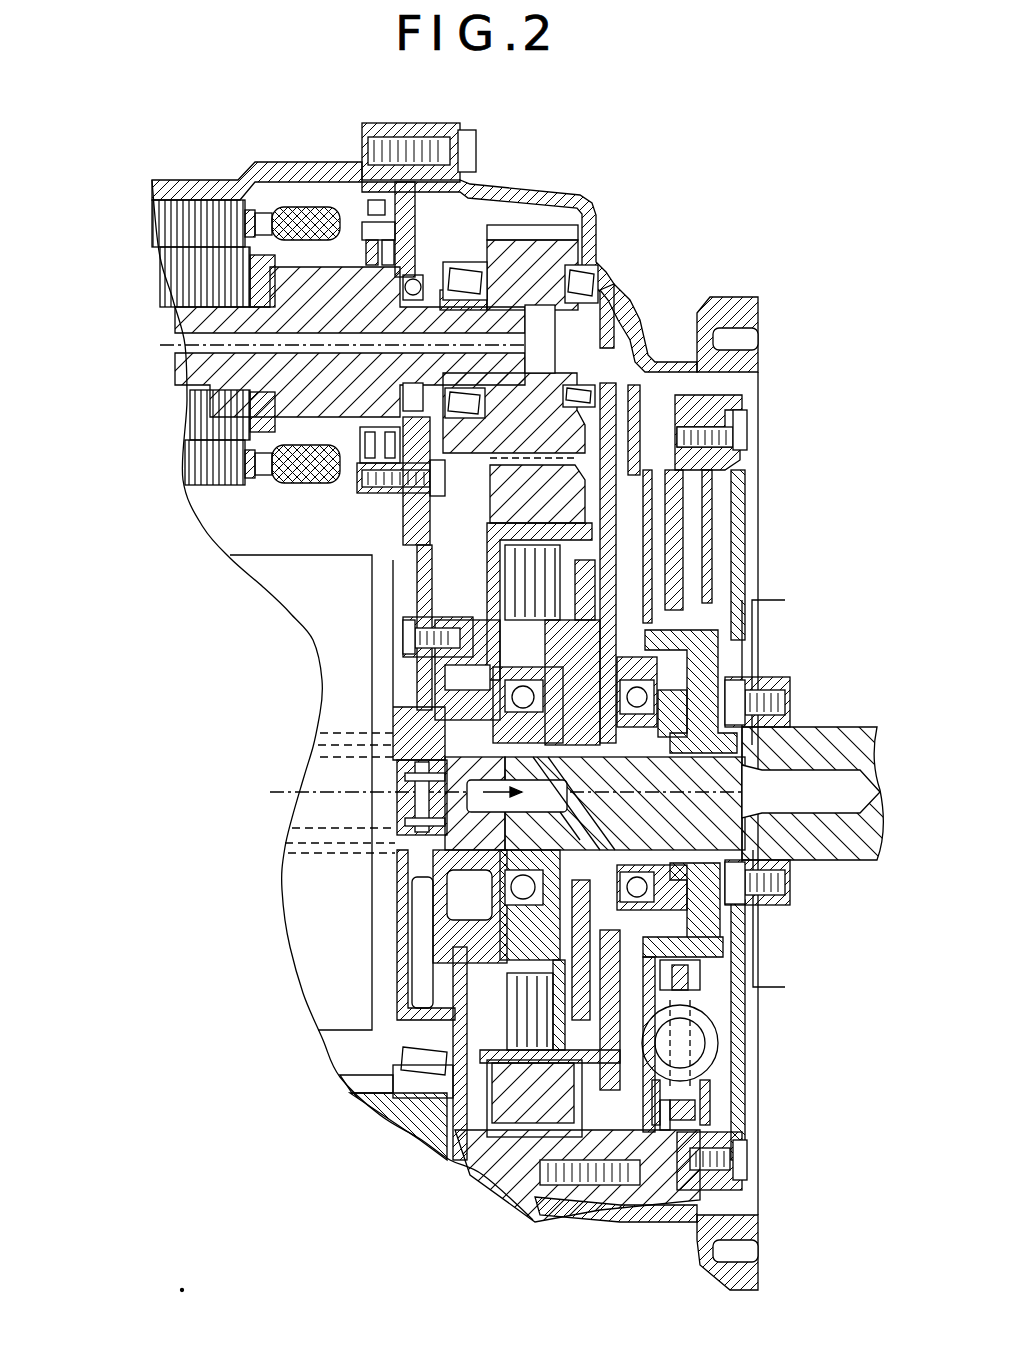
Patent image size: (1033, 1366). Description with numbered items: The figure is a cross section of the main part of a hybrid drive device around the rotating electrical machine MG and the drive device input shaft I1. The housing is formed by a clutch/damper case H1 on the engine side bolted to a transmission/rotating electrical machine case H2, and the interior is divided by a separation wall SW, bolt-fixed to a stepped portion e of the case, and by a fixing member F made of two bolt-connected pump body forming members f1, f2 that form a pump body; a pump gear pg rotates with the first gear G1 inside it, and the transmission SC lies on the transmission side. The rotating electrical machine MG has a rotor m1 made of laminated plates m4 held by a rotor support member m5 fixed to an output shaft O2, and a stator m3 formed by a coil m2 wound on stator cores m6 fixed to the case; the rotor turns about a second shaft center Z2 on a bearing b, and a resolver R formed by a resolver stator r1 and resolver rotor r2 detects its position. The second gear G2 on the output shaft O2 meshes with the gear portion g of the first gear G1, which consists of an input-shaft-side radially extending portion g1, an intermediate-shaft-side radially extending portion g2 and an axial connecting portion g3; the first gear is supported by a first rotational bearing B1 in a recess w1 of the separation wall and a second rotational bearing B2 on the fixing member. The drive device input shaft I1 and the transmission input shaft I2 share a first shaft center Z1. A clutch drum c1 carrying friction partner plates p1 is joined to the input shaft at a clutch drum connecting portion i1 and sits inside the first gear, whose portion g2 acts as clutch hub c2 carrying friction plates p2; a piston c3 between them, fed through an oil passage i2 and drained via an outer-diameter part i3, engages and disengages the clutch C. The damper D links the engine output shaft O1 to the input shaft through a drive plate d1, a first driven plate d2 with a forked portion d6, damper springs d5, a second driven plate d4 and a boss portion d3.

The rotating electrical machine MG is at (190, 184).
The transmission/rotating electrical machine case H2 is at (300, 162).
The resolver R is at (360, 195).
The second gear G2 is at (532, 242).
The clutch/damper case H1 is at (595, 216).
The bearing b is at (462, 278).
The separation wall SW is at (640, 413).
The stepped portion e is at (630, 385).
The damper D is at (737, 795).
The input-shaft-side radially extending portion g1 is at (627, 545).
The clutch C is at (577, 548).
The gear portion g is at (490, 457).
The connecting portion g3 is at (523, 473).
The intermediate-shaft-side radially extending portion g2 is at (487, 568).
The transmission SC is at (300, 556).
The fixing member F is at (399, 632).
The pump body forming member f2 is at (422, 563).
The pump body forming member f1 is at (477, 677).
The second rotational bearing B2 is at (520, 690).
The recess w1 is at (663, 692).
The engine output shaft O1 is at (828, 728).
The transmission input shaft I2 is at (405, 770).
The first shaft center Z1 is at (491, 792).
The second shaft center Z2 is at (340, 344).
The oil passage i2 is at (574, 802).
The clutch drum connecting portion i1 is at (585, 816).
The first rotational bearing B1 is at (637, 872).
The drive device input shaft I1 is at (725, 779).
The pump gear pg is at (452, 1005).
The outer-diameter part i3 is at (496, 906).
The friction plates p2 is at (487, 965).
The piston c3 is at (563, 977).
The clutch hub c2 is at (490, 1040).
The friction partner plates p1 is at (538, 1042).
The clutch drum c1 is at (586, 1045).
The first gear G1 is at (513, 1113).
The boss portion d3 is at (713, 940).
The drive plate d1 is at (745, 1017).
The damper springs d5 is at (710, 1043).
The forked portion d6 is at (730, 1082).
The second driven plate d4 is at (730, 1123).
The first driven plate d2 is at (737, 1177).
The stator cores m6 is at (163, 221).
The laminated plates m4 is at (173, 285).
The output shaft O2 is at (185, 320).
The rotor support member m5 is at (267, 264).
The rotor m1 is at (212, 390).
The resolver rotor r2 is at (400, 400).
The resolver stator r1 is at (360, 440).
The coil m2 is at (317, 477).
The stator m3 is at (210, 490).